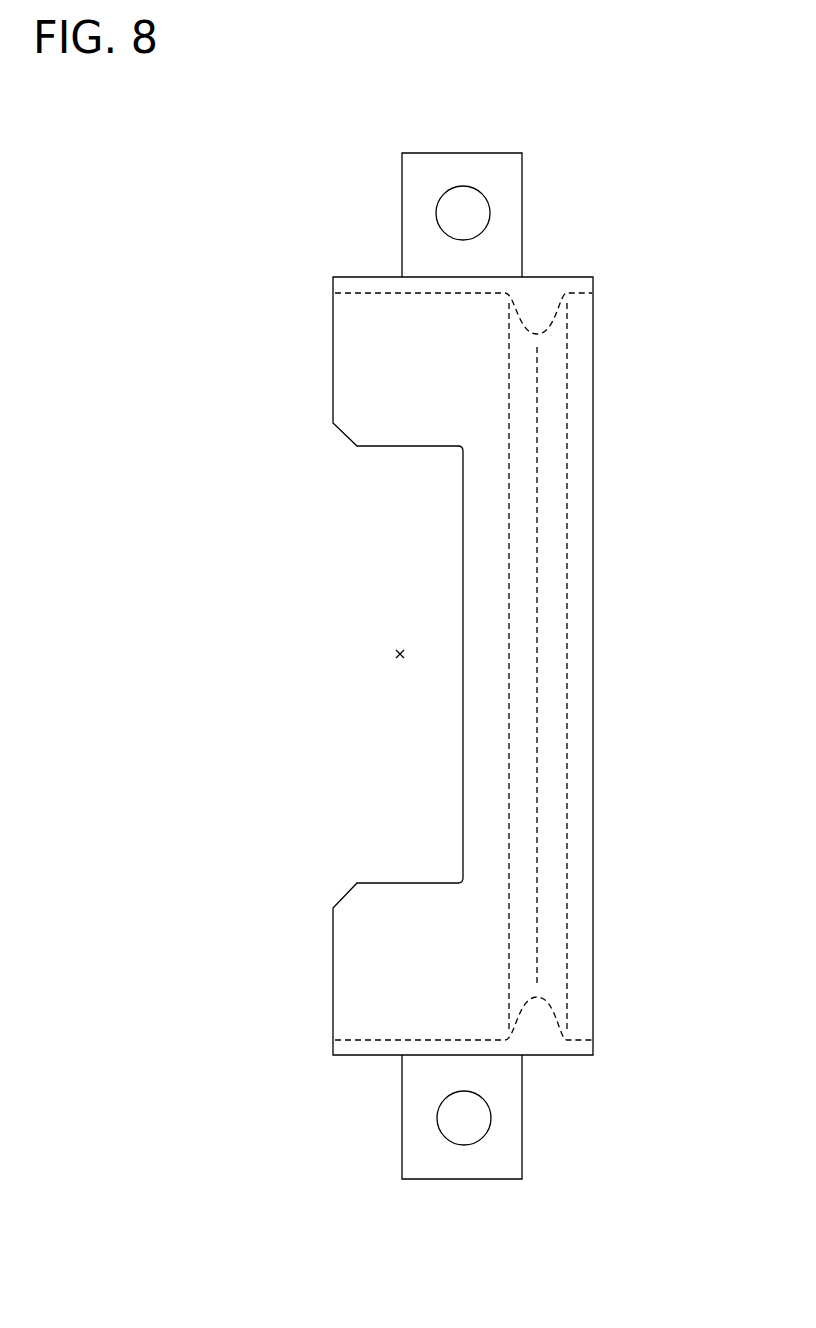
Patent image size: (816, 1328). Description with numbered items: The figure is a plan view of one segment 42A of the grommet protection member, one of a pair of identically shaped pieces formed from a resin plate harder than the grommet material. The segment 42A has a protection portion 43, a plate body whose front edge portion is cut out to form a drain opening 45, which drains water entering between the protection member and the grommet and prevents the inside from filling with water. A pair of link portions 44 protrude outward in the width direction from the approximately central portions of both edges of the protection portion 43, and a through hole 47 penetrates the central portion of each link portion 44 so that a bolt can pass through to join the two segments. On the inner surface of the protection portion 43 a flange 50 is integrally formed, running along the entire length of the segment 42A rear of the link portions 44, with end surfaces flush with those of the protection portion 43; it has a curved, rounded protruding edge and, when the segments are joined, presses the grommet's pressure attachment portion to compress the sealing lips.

The segment 42A is at (636, 299).
The protection portion 43 is at (593, 597).
The link portion 44 is at (508, 214).
The drain opening 45 is at (395, 654).
The through hole 47 is at (462, 200).
The flange 50 is at (548, 723).